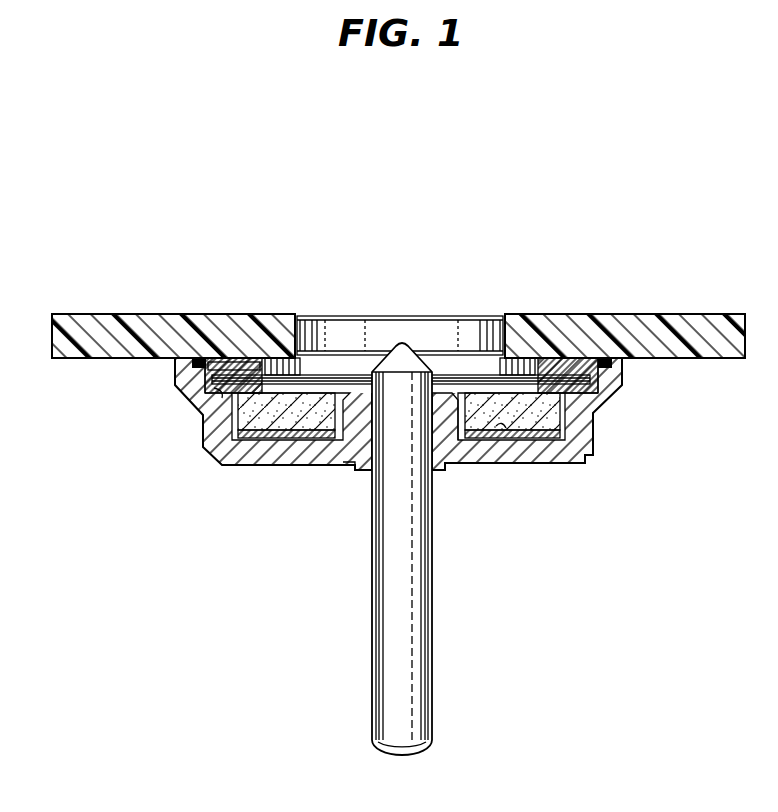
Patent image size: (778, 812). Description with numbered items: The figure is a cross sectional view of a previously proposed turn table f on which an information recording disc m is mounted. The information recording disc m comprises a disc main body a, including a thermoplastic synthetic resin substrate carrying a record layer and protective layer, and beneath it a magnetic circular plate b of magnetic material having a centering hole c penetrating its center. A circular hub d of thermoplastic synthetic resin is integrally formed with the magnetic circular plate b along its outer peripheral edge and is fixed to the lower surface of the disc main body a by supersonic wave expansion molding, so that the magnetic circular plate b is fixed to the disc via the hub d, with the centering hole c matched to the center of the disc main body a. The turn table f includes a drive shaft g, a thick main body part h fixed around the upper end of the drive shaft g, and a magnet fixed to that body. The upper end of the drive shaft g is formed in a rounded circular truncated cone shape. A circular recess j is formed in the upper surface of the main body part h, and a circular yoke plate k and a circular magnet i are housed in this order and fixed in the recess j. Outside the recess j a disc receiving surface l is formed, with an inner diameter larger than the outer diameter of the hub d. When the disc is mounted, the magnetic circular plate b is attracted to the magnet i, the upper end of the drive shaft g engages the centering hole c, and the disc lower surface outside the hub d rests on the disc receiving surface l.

The disc main body a is at (114, 316).
The magnetic circular plate b is at (480, 370).
The centering hole c is at (392, 368).
The hub d is at (212, 367).
The turn table f is at (222, 470).
The drive shaft g is at (433, 620).
The thick main body part h is at (338, 472).
The circular magnet i is at (302, 440).
The circular recess j is at (215, 385).
The circular yoke plate k is at (540, 440).
The disc receiving surface l is at (197, 357).
The information recording disc m is at (631, 255).